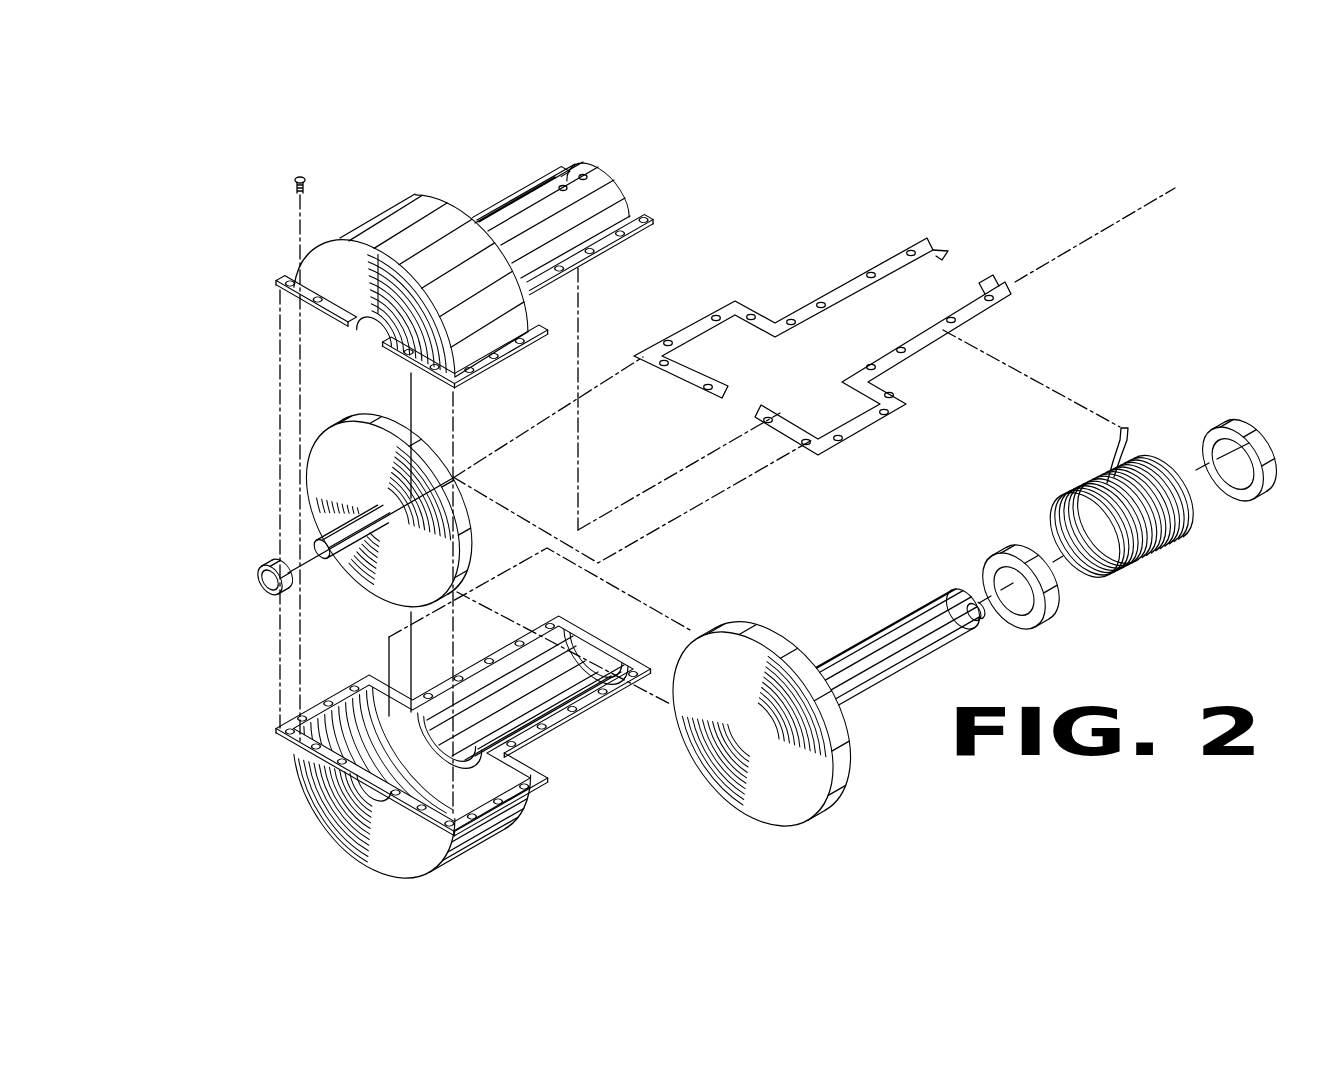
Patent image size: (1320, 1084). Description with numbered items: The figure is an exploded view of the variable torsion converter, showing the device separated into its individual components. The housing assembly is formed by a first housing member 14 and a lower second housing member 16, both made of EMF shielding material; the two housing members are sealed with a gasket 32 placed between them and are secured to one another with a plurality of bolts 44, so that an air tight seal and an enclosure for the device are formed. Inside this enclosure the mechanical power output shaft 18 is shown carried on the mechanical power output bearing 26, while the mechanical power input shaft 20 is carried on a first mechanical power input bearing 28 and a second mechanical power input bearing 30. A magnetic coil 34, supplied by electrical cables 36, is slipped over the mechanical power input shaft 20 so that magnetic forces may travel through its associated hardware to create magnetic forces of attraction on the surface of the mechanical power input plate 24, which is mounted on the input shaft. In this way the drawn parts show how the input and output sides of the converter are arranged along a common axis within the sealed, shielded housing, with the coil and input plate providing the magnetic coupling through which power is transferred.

The first housing member 14 is at (337, 222).
The second housing member 16 is at (376, 870).
The mechanical power output shaft 18 is at (322, 550).
The mechanical power input shaft 20 is at (853, 690).
The mechanical power input plate 24 is at (793, 828).
The mechanical power output bearing 26 is at (268, 598).
The first mechanical power input bearing 28 is at (1060, 596).
The second mechanical power input bearing 30 is at (1243, 498).
The gasket 32 is at (958, 303).
The magnetic coil 34 is at (1098, 510).
The electrical cables 36 is at (1127, 425).
The bolt 44 is at (297, 195).